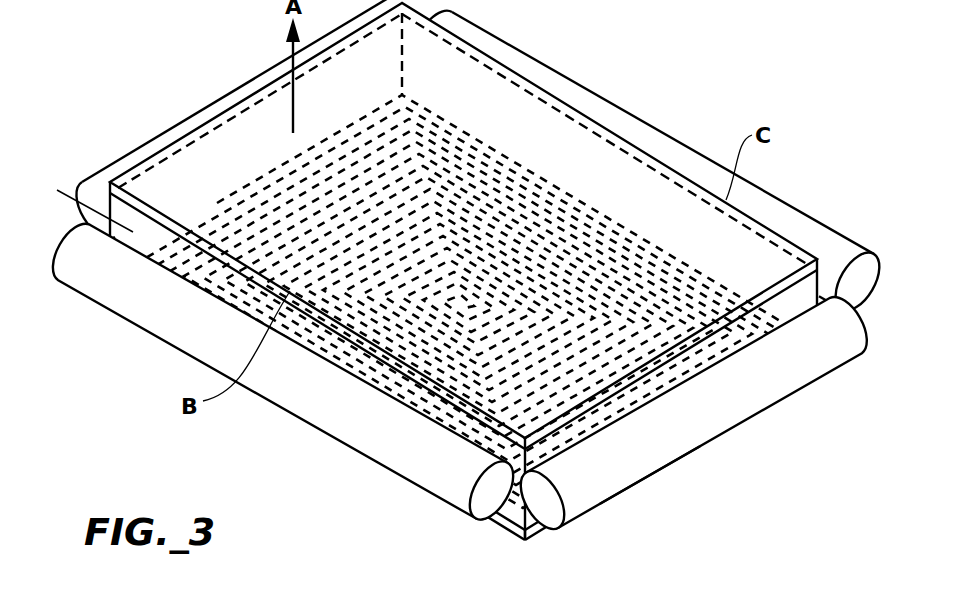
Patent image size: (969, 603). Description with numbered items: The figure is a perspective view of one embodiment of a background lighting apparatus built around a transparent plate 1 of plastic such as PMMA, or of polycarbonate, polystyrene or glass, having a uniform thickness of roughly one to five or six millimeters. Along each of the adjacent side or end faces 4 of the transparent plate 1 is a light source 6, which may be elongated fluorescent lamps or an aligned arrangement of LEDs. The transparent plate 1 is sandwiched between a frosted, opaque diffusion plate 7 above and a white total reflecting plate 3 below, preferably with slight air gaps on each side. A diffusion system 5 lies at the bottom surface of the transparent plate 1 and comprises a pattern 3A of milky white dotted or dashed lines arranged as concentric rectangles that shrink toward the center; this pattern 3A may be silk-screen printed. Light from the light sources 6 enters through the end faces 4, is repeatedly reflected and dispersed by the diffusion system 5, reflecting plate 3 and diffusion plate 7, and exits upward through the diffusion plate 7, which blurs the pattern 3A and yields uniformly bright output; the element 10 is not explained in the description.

The heating apparatus 1 is at (818, 260).
The lower plate 3 is at (506, 536).
The heater element 3A is at (481, 175).
The roller shaft 4 is at (73, 193).
The base plate 5 is at (545, 532).
The roller 6 is at (258, 78).
The transparent top plate 7 is at (658, 196).
The lower roller surface 10 is at (648, 477).